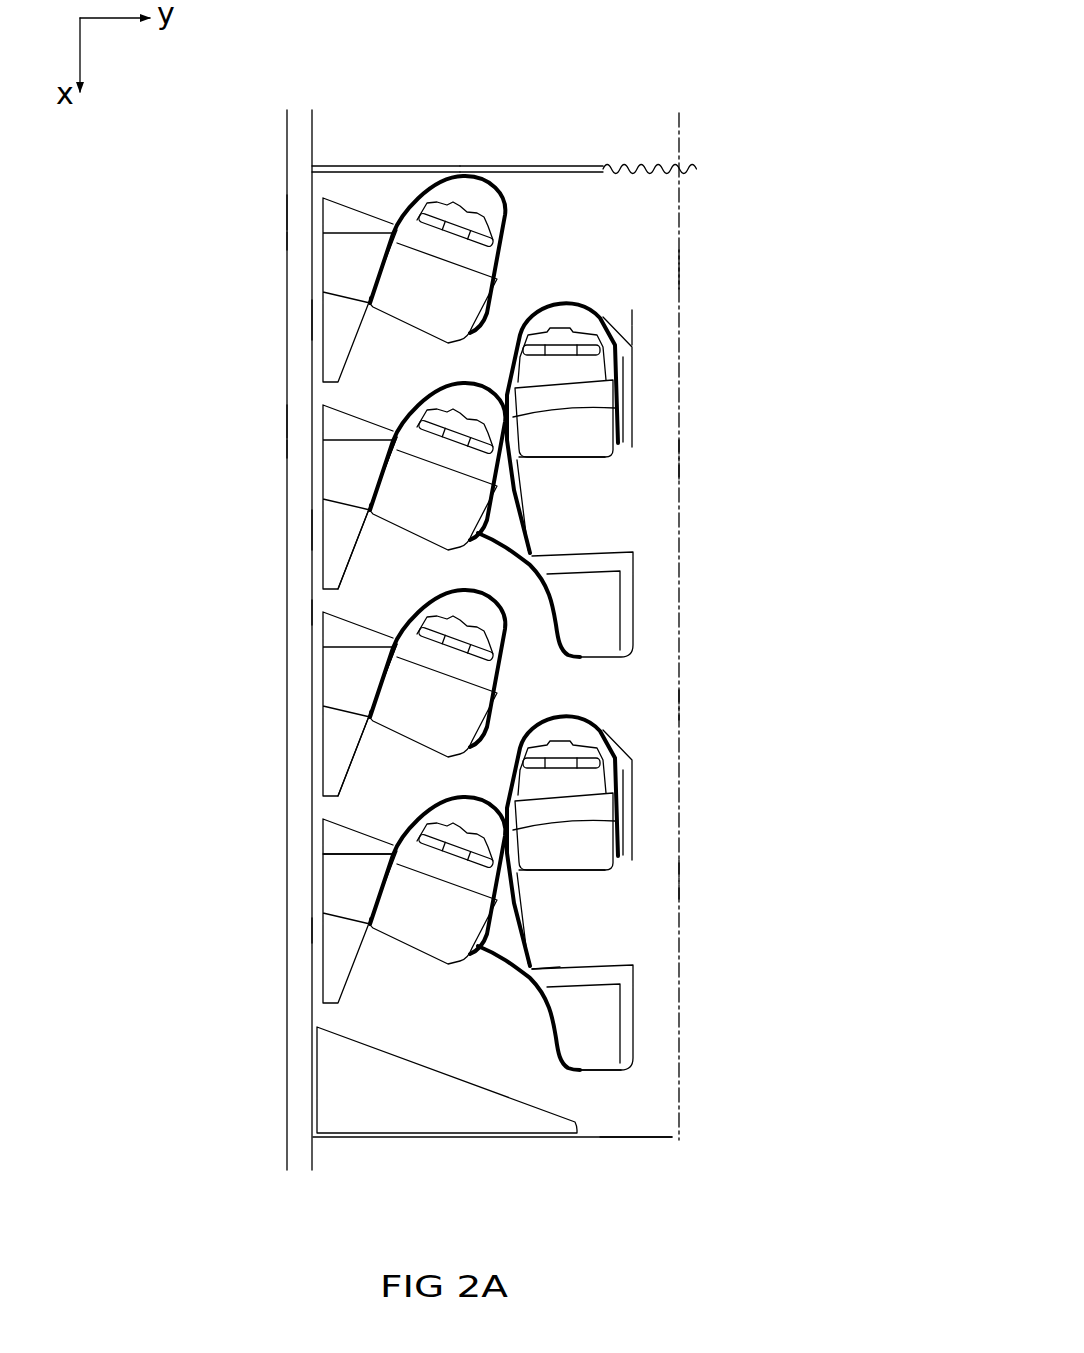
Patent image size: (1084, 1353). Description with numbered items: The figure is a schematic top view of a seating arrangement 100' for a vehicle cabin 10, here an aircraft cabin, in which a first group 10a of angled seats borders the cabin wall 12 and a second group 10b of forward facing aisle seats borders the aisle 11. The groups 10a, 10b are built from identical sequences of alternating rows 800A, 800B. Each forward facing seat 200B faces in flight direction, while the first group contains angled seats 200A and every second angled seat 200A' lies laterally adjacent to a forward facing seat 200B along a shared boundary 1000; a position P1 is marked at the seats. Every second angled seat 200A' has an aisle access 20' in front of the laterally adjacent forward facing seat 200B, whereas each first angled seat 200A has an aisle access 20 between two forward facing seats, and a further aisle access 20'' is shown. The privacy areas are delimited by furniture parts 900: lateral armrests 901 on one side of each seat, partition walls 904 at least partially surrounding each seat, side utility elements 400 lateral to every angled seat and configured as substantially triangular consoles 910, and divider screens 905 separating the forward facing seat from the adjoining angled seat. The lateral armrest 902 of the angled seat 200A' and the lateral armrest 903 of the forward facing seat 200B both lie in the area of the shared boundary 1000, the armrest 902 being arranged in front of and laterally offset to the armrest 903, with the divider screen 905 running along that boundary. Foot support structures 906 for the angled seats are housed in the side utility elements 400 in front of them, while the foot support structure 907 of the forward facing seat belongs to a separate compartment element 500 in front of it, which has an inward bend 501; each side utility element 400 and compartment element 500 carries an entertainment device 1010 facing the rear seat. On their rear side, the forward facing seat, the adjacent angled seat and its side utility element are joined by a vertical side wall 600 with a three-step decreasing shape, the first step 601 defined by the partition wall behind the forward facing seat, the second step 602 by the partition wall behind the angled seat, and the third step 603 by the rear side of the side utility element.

The vehicle cabin 10 is at (833, 158).
The first group 10a is at (438, 133).
The second group 10b is at (580, 133).
The seating arrangement 100' is at (790, 599).
The aisle 11 is at (749, 1036).
The cabin wall 12 is at (305, 1053).
The aisle access 20 is at (550, 536).
The aisle access 20' is at (504, 790).
The seat 20'' is at (564, 439).
The angled seat 200A is at (201, 206).
The angled seat 200A' is at (201, 413).
The forward facing seat 200B is at (647, 335).
The side utility element 400 is at (328, 280).
The compartment element 500 is at (645, 545).
The bend 501 is at (575, 1040).
The vertical side wall 600 is at (642, 770).
The first step 601 is at (627, 742).
The second step 602 is at (345, 793).
The third step 603 is at (330, 842).
The first row 800A is at (775, 268).
The second row 800B is at (775, 463).
The furniture parts 900 is at (296, 182).
The lateral armrest 901 is at (385, 247).
The lateral armrest 902 is at (325, 404).
The lateral armrest 903 is at (600, 386).
The partition wall 904 is at (467, 162).
The divider screen 905 is at (528, 470).
The foot support structure 906 is at (340, 480).
The foot support structure 907 is at (583, 625).
The console 910 is at (312, 320).
The shared boundary 1000 is at (605, 470).
The entertainment device 1010 is at (318, 612).
The position P1 is at (272, 240).